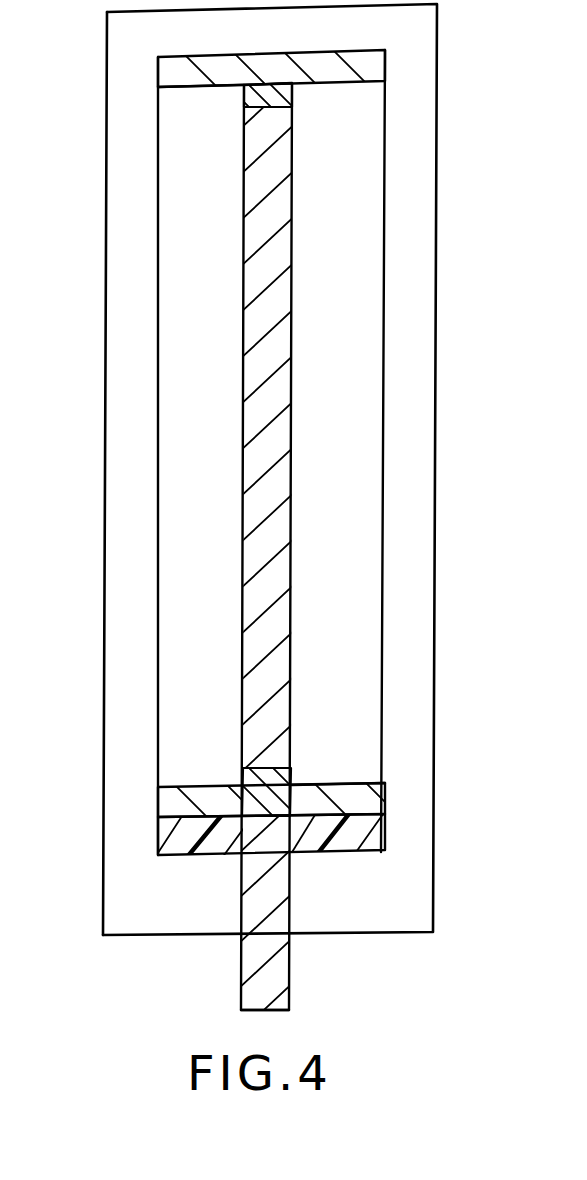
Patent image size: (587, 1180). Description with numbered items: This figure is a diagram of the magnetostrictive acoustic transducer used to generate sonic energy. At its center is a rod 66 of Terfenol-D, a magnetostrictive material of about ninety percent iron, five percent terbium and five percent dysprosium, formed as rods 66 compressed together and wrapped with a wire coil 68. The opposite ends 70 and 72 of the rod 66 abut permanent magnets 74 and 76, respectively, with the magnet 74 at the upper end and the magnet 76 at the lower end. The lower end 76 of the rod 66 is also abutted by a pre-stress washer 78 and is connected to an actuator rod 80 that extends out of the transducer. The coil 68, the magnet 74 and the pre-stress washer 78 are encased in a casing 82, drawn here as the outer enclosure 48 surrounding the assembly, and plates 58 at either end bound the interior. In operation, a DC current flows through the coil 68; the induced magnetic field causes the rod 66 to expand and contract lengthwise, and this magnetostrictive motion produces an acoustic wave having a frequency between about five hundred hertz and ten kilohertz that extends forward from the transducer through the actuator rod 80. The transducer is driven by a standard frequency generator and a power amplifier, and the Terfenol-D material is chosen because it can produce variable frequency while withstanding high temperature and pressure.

The housing 48 is at (437, 305).
The end plate 58 is at (335, 85).
The rod 66 is at (292, 252).
The wire coil 68 is at (355, 472).
The end of rod 70 is at (292, 100).
The end of rod 72 is at (241, 777).
The permanent magnet 74 is at (170, 87).
The permanent magnet 76 is at (312, 786).
The pre-stress washer 78 is at (332, 853).
The actuator rod 80 is at (289, 962).
The casing 82 is at (107, 106).